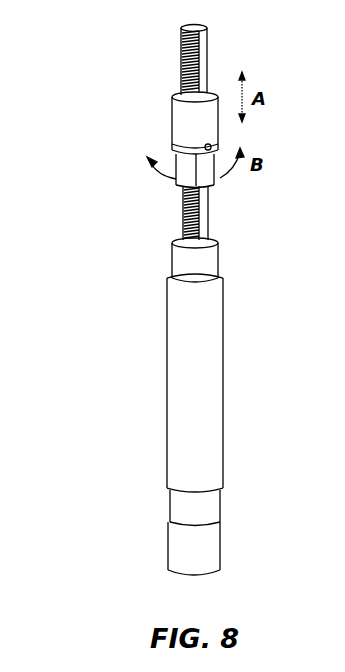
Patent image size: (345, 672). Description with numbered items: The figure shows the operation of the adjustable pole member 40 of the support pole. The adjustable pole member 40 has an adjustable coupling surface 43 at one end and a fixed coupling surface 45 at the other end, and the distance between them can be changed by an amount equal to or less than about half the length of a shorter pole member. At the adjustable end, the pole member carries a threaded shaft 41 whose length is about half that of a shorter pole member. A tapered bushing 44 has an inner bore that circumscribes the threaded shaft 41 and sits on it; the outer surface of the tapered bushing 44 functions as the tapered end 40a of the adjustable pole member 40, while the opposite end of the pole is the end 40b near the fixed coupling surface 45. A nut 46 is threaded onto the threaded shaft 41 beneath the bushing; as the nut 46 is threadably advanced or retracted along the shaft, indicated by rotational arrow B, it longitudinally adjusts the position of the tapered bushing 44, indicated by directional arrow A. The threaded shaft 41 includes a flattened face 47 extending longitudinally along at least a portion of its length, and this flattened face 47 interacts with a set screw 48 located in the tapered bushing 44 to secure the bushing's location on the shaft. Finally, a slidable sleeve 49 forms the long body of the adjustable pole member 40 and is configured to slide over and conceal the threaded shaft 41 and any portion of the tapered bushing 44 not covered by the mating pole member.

The adjustable pole member 40 is at (116, 373).
The tapered end 40a is at (220, 128).
The lower end 40b is at (205, 548).
The threaded shaft 41 is at (184, 222).
The adjustable coupling surface 43 is at (184, 113).
The tapered bushing 44 is at (222, 96).
The fixed coupling surface 45 is at (210, 500).
The nut 46 is at (186, 168).
The flattened face 47 is at (222, 210).
The set screw 48 is at (203, 144).
The slidable sleeve 49 is at (210, 370).